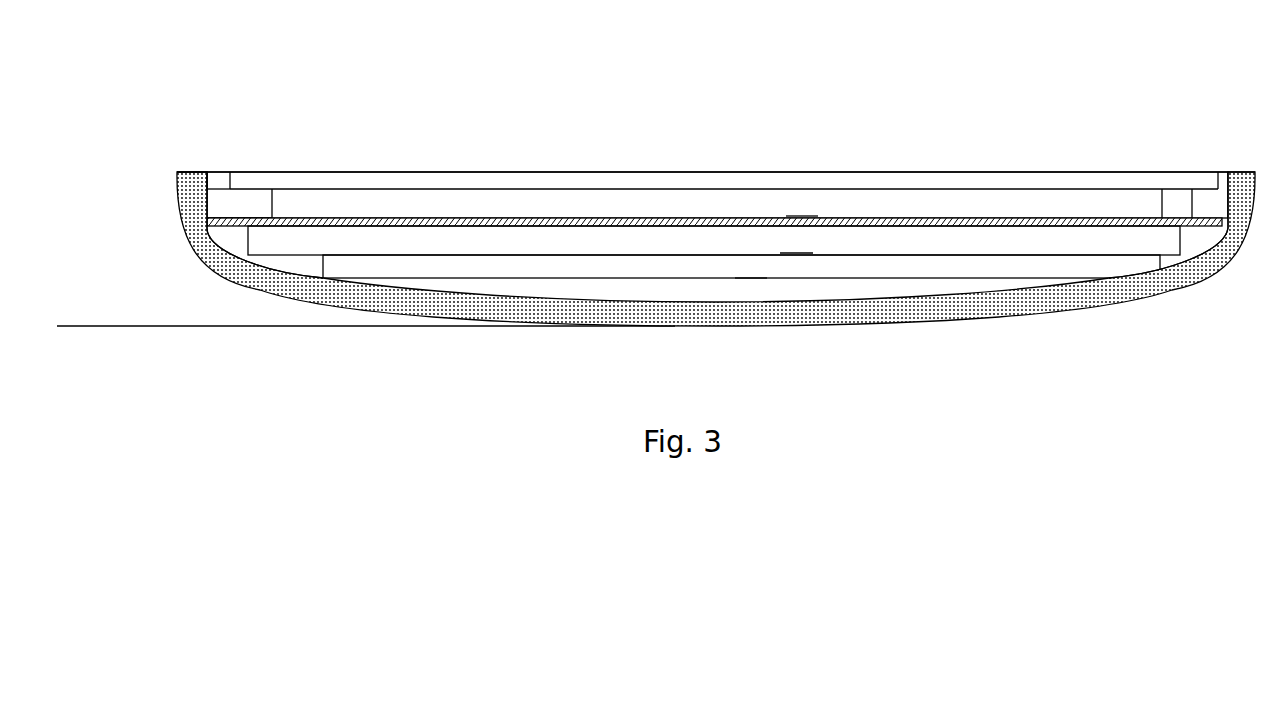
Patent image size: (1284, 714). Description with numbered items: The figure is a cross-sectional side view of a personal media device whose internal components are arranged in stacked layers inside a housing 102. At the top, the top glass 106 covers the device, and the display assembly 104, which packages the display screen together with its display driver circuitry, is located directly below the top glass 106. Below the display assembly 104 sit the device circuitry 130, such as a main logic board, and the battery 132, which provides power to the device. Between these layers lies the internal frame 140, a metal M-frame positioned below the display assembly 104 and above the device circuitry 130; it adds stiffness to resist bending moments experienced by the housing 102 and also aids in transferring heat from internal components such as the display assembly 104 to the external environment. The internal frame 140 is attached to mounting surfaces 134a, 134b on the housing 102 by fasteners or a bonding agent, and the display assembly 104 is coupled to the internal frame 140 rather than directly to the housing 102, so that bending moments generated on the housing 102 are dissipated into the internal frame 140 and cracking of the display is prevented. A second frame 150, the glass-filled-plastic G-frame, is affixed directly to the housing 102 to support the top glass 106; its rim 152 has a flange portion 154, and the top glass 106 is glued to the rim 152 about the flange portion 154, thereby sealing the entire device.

The housing 102 is at (716, 249).
The display assembly 104 is at (717, 195).
The top glass 106 is at (745, 171).
The device circuitry 130 is at (714, 240).
The battery 132 is at (741, 267).
The mounting surface 134a is at (232, 237).
The mounting surface 134b is at (1203, 240).
The internal frame 140 is at (353, 227).
The frame 150 is at (215, 161).
The rim 152 is at (222, 177).
The flange portion 154 is at (250, 207).